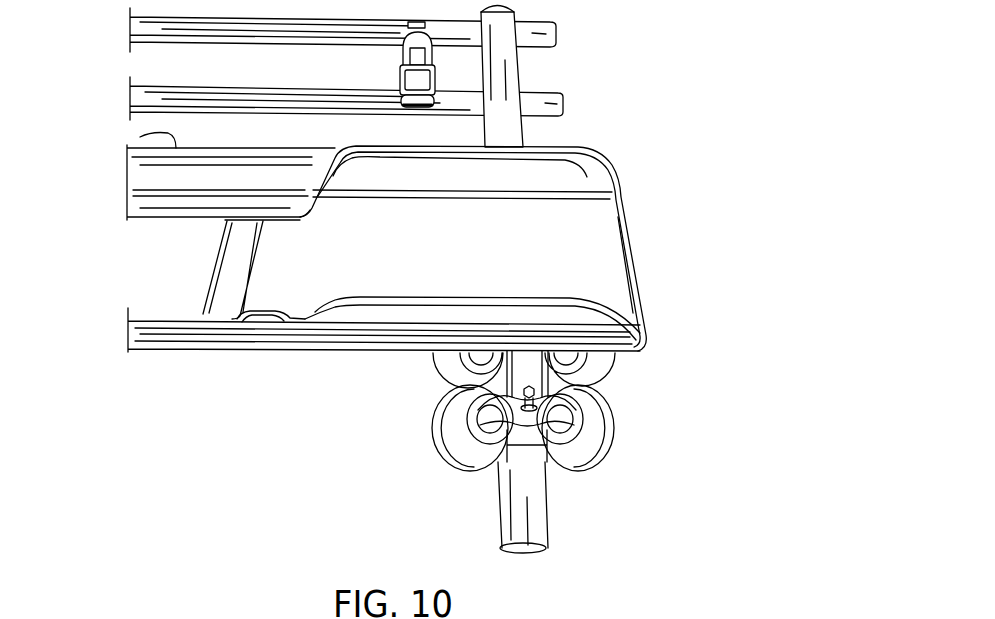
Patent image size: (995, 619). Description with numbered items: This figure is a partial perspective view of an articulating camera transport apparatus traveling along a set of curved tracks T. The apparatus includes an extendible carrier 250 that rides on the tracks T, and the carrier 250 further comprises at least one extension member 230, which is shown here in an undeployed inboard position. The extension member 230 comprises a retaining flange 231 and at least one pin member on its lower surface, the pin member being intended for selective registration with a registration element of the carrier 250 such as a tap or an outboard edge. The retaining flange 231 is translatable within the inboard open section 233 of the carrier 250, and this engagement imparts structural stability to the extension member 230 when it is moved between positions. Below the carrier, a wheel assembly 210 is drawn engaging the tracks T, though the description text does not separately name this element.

The extendible carrier 250 is at (140, 137).
The extension member 230 is at (570, 147).
The inboard open section 233 is at (158, 237).
The retaining flange 231 is at (218, 296).
The caster assembly 210 is at (615, 430).
The curved tracks T is at (548, 505).